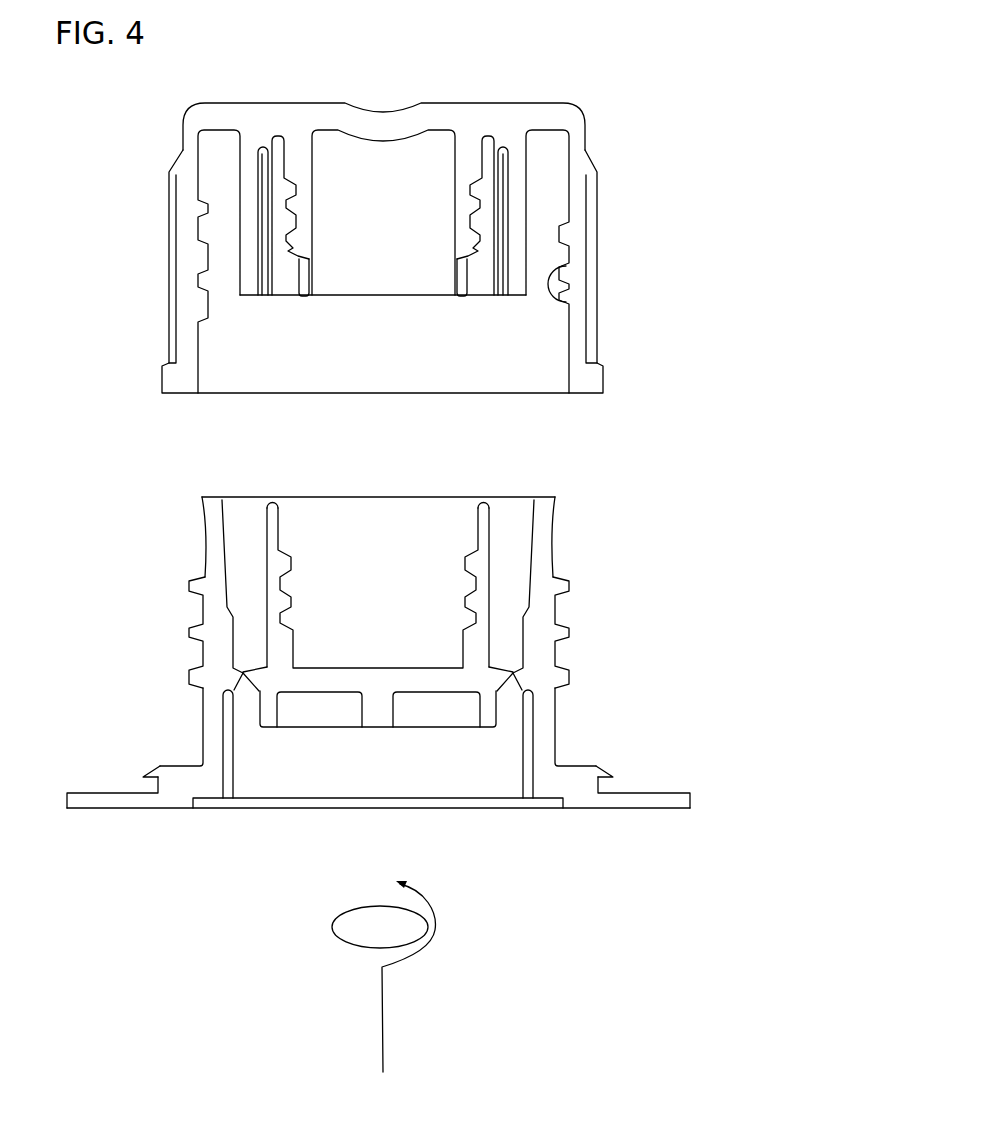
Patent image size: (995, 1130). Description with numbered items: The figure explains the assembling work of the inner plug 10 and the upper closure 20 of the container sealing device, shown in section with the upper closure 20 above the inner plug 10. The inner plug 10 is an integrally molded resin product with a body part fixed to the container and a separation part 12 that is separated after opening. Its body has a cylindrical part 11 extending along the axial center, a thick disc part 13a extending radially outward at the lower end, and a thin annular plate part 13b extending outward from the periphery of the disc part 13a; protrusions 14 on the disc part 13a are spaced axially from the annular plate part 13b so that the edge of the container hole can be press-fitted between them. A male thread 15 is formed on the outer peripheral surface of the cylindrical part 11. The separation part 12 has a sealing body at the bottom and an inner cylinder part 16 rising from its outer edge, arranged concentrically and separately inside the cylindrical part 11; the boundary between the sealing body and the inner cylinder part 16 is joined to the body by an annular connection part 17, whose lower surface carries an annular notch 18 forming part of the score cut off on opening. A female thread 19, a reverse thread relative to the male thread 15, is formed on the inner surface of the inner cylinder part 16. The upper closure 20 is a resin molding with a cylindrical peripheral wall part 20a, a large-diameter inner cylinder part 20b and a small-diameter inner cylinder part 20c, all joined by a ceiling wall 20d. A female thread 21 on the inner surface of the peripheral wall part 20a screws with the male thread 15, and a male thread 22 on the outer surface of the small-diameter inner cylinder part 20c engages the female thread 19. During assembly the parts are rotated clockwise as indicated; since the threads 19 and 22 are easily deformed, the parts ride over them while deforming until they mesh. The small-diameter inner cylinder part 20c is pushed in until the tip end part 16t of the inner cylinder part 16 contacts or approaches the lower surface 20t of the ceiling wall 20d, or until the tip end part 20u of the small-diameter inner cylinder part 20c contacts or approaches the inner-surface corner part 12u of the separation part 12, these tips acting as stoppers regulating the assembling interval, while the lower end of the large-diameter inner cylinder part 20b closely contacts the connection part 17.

The inner plug 10 is at (558, 543).
The cylindrical part 11 is at (547, 723).
The separation part 12 is at (343, 682).
The inner-surface corner part 12u is at (462, 677).
The disc part 13a is at (583, 789).
The annular plate part 13b is at (668, 793).
The protrusions 14 is at (612, 766).
The male thread 15 is at (570, 583).
The inner cylinder part 16 is at (491, 537).
The tip end part 16t is at (481, 497).
The connection part 17 is at (503, 666).
The notch 18 is at (506, 680).
The female thread 19 is at (462, 548).
The upper closure 20 is at (592, 104).
The peripheral wall part 20a is at (578, 207).
The large-diameter inner cylinder part 20b is at (517, 186).
The small-diameter inner cylinder part 20c is at (455, 165).
The ceiling wall 20d is at (299, 113).
The lower surface 20t is at (492, 134).
The tip end part 20u is at (461, 296).
The female thread 21 is at (572, 300).
The male thread 22 is at (470, 257).